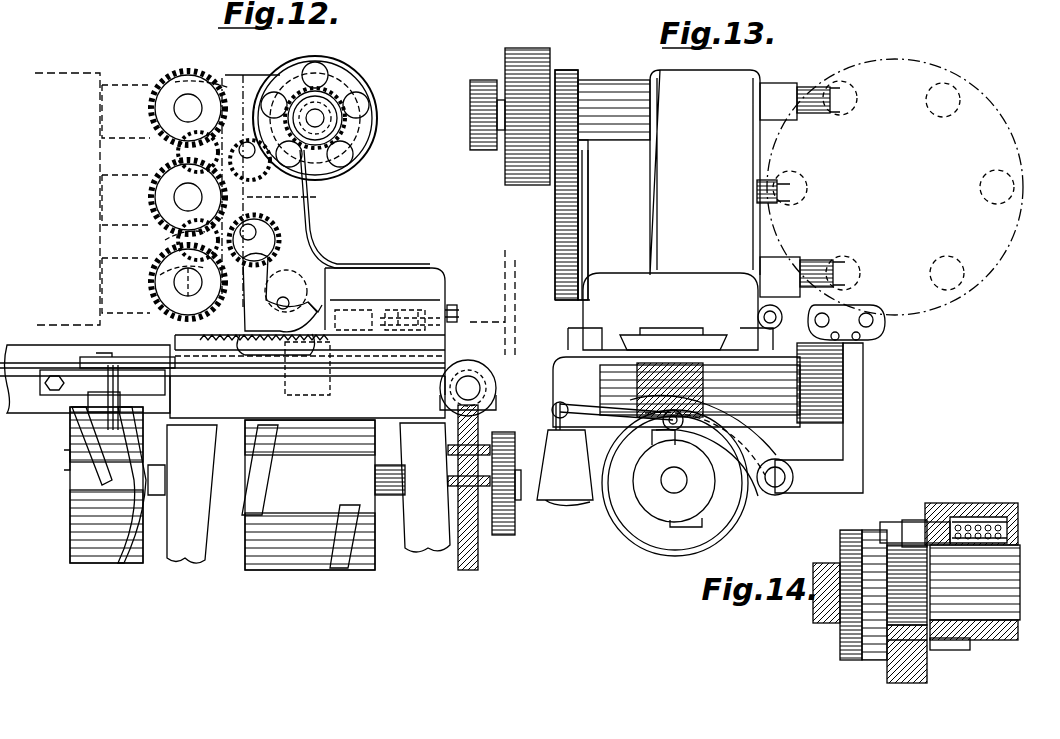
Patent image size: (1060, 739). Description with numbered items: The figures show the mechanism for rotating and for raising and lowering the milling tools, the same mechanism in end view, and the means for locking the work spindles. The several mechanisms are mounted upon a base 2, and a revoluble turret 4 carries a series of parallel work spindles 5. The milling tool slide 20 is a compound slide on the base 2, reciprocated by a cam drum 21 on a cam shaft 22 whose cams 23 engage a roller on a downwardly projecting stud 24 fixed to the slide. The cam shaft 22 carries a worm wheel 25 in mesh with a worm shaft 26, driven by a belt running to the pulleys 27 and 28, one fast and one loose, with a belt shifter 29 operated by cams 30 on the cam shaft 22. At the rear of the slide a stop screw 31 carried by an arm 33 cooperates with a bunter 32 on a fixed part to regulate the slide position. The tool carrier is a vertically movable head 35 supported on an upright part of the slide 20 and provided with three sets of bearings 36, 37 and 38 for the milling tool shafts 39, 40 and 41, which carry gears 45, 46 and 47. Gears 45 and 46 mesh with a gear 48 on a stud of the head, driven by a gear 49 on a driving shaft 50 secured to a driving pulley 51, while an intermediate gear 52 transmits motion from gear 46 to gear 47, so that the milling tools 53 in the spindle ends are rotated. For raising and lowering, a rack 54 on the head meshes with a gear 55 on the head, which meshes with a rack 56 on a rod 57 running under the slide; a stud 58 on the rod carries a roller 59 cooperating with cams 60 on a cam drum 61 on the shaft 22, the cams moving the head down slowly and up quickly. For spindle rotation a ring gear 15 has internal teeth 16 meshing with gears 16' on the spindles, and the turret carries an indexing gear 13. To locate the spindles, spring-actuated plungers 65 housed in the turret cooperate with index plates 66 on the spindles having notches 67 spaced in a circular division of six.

In FIG. 12, the base 2 is at (222, 381).
In FIG. 13, the base 2 is at (676, 350).
In FIG. 12, the revoluble turret 4 is at (67, 199).
In FIG. 13, the revoluble turret 4 is at (895, 187).
In FIG. 14, the revoluble turret 4 is at (990, 508).
In FIG. 12, the work spindle 5 is at (126, 199).
In FIG. 13, the work spindle 5 is at (858, 100).
In FIG. 14, the work spindle 5 is at (975, 592).
In FIG. 14, the gear 13 is at (962, 645).
In FIG. 14, the ring gear 15 is at (927, 662).
In FIG. 14, the internal teeth 16 is at (877, 618).
In FIG. 14, the gear 16' is at (907, 532).
In FIG. 12, the milling tool slide 20 is at (350, 290).
In FIG. 13, the milling tool slide 20 is at (705, 172).
In FIG. 12, the cam drum 21 is at (308, 495).
In FIG. 12, the cam shaft 22 is at (390, 480).
In FIG. 13, the cam shaft 22 is at (674, 480).
In FIG. 12, the cam 23 is at (301, 496).
In FIG. 12, the stud 24 is at (322, 370).
In FIG. 12, the worm wheel 25 is at (470, 560).
In FIG. 13, the worm wheel 25 is at (638, 540).
In FIG. 12, the worm shaft 26 is at (480, 388).
In FIG. 13, the worm shaft 26 is at (745, 422).
In FIG. 12, the pulley 27 is at (497, 393).
In FIG. 13, the pulley 27 is at (822, 380).
In FIG. 13, the pulley 28 is at (855, 388).
In FIG. 12, the belt shifter 29 is at (506, 302).
In FIG. 13, the belt shifter 29 is at (865, 400).
In FIG. 12, the cam 30 is at (502, 435).
In FIG. 13, the cam 30 is at (672, 440).
In FIG. 12, the stop screw 31 is at (456, 305).
In FIG. 13, the stop screw 31 is at (782, 313).
In FIG. 12, the bunter 32 is at (390, 300).
In FIG. 12, the arm 33 is at (432, 303).
In FIG. 13, the arm 33 is at (757, 314).
In FIG. 12, the vertically movable slide or head 35 is at (338, 209).
In FIG. 12, the bearing 36 is at (176, 75).
In FIG. 13, the bearing 36 is at (765, 92).
In FIG. 12, the bearing 37 is at (172, 233).
In FIG. 13, the bearing 37 is at (757, 190).
In FIG. 12, the bearing 38 is at (182, 316).
In FIG. 13, the bearing 38 is at (765, 262).
In FIG. 12, the milling tool shaft 39 is at (188, 108).
In FIG. 13, the milling tool shaft 39 is at (780, 92).
In FIG. 12, the milling tool shaft 40 is at (188, 197).
In FIG. 12, the milling tool shaft 41 is at (188, 282).
In FIG. 13, the milling tool shaft 41 is at (805, 272).
In FIG. 12, the gear 45 is at (170, 150).
In FIG. 12, the gear 46 is at (165, 212).
In FIG. 13, the gear 46 is at (582, 190).
In FIG. 12, the gear 47 is at (162, 270).
In FIG. 13, the gear 47 is at (580, 275).
In FIG. 12, the gear 48 is at (251, 192).
In FIG. 13, the gear 48 is at (580, 165).
In FIG. 12, the gear 49 is at (348, 113).
In FIG. 13, the gear 49 is at (578, 110).
In FIG. 12, the driving shaft 50 is at (315, 118).
In FIG. 13, the driving shaft 50 is at (550, 95).
In FIG. 12, the driving pulley 51 is at (355, 72).
In FIG. 13, the driving pulley 51 is at (530, 48).
In FIG. 12, the intermediate gear 52 is at (265, 236).
In FIG. 13, the intermediate gear 52 is at (583, 228).
In FIG. 13, the milling tool 53 is at (797, 108).
In FIG. 12, the rack 54 is at (270, 285).
In FIG. 12, the gear 55 is at (311, 304).
In FIG. 12, the rack 56 is at (272, 348).
In FIG. 12, the rod 57 is at (160, 360).
In FIG. 12, the stud 58 is at (118, 385).
In FIG. 12, the roller 59 is at (96, 412).
In FIG. 12, the cam 60 is at (102, 470).
In FIG. 12, the cam drum 61 is at (98, 486).
In FIG. 14, the plunger 65 is at (935, 533).
In FIG. 14, the index plate 66 is at (872, 605).
In FIG. 14, the notch 67 is at (872, 640).